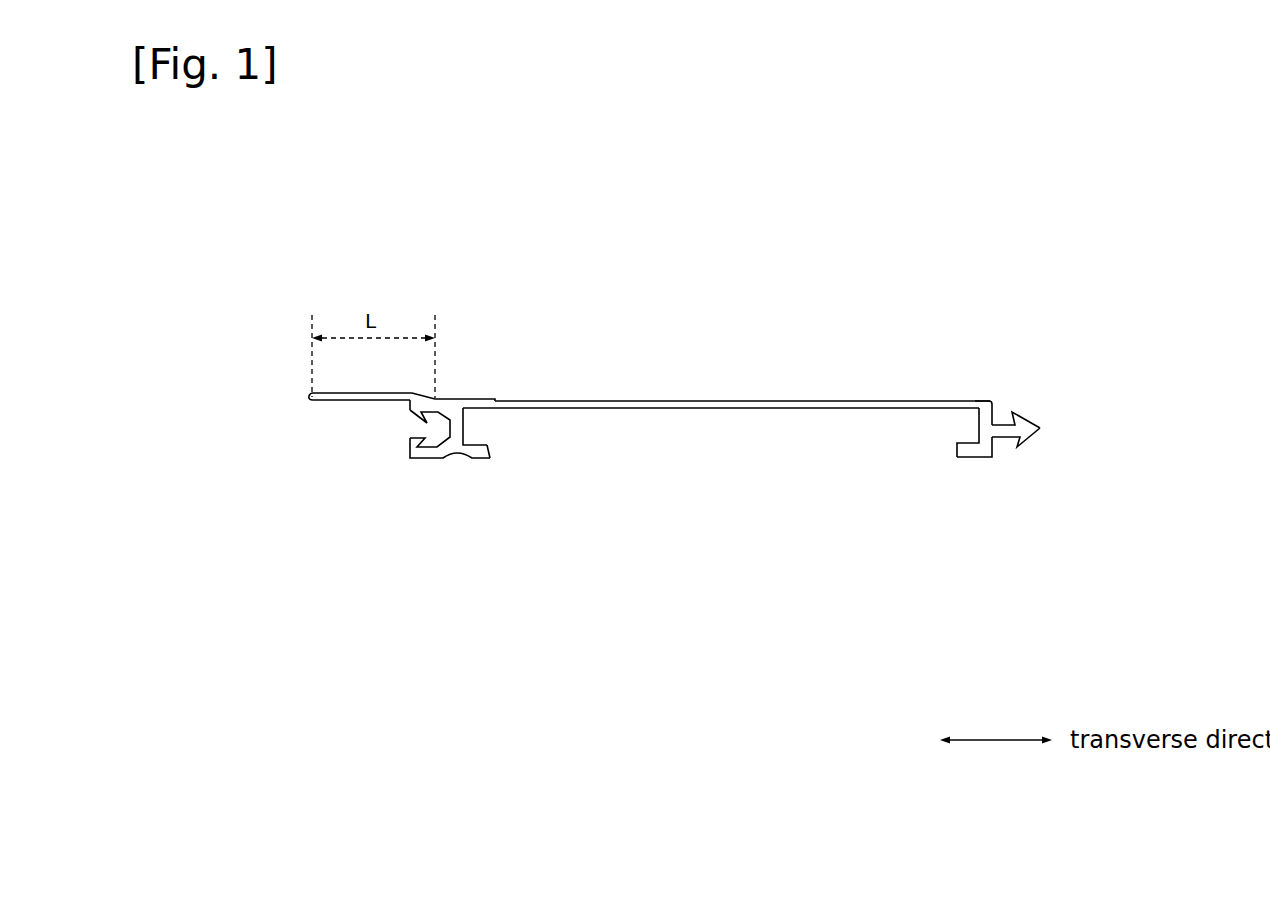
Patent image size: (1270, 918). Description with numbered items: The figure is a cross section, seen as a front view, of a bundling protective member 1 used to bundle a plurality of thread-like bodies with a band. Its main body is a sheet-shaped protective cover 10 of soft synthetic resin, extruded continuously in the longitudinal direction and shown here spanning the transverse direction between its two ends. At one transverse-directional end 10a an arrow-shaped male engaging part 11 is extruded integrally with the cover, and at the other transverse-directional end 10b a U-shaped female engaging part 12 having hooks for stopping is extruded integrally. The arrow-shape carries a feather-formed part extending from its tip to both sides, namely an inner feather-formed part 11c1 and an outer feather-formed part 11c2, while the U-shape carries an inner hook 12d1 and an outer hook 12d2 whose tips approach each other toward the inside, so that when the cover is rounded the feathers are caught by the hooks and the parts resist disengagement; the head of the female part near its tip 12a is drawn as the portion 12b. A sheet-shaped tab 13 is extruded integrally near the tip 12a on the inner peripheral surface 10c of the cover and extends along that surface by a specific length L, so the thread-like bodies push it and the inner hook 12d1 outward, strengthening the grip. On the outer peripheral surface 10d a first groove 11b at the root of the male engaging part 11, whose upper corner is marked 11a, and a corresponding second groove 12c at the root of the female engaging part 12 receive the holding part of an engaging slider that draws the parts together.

The bundling protective member 1 is at (982, 281).
The protective cover 10 is at (726, 407).
The one transverse-directional end 10a is at (958, 410).
The other transverse-directional end 10b is at (493, 410).
The inner peripheral surface 10c is at (620, 400).
The outer peripheral surface 10d is at (747, 410).
The male engaging part 11 is at (1020, 458).
The upper corner of engaging portion 11a is at (980, 402).
The first groove 11b is at (958, 456).
The inner feather-formed part 11c1 is at (1017, 412).
The outer feather-formed part 11c2 is at (1015, 447).
The female engaging part 12 is at (422, 458).
The tip of the female engaging part 12a is at (437, 398).
The head wall of receiving portion 12b is at (474, 400).
The second groove 12c is at (486, 456).
The inner hook 12d1 is at (428, 421).
The outer hook 12d2 is at (420, 440).
The tab 13 is at (353, 398).